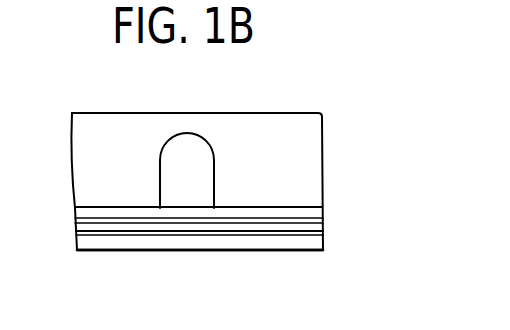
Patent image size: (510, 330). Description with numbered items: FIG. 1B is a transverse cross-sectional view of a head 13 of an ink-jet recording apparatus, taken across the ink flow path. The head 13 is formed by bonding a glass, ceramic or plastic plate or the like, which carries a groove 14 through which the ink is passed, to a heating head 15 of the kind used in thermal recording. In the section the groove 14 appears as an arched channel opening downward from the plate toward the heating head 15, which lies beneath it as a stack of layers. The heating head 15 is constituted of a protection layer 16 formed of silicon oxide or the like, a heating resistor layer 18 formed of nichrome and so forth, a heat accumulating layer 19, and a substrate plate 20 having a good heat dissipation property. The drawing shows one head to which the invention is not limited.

The head 13 is at (104, 113).
The groove 14 is at (204, 133).
The heating head 15 is at (336, 198).
The protection layer 16 is at (252, 207).
The heating resistor layer 18 is at (288, 222).
The heat accumulating layer 19 is at (306, 231).
The substrate plate 20 is at (247, 242).